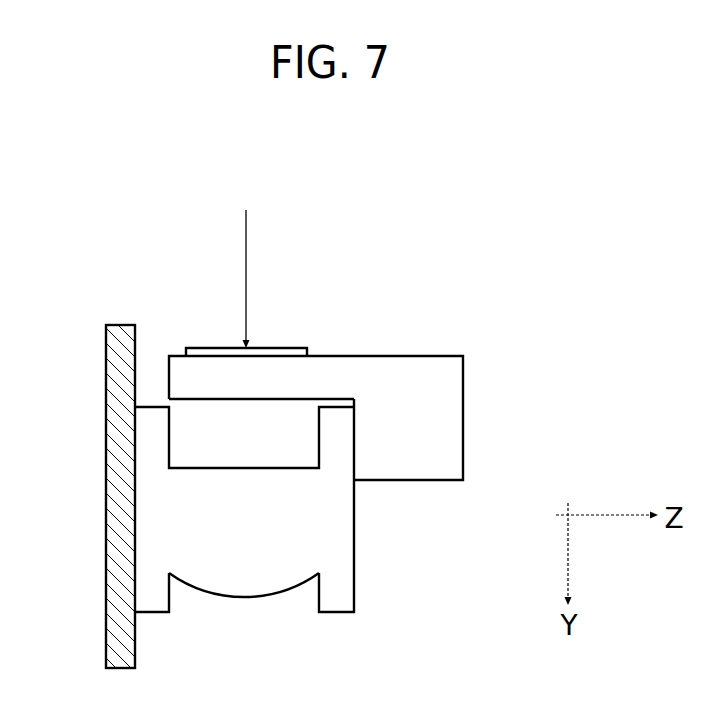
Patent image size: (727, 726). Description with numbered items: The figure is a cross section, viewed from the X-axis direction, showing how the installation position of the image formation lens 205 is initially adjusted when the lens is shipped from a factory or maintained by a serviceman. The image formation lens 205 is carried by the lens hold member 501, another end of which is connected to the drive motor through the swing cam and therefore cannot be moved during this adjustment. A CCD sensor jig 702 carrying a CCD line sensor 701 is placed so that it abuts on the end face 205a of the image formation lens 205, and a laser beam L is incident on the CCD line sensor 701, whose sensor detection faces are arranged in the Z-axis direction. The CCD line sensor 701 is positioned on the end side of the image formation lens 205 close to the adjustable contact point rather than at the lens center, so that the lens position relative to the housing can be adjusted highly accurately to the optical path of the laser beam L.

The lens hold member 501 is at (114, 476).
The CCD sensor jig 702 is at (442, 370).
The CCD line sensor 701 is at (191, 347).
The light beam L is at (248, 275).
The end face 205a is at (356, 567).
The image formation lens 205 is at (245, 589).